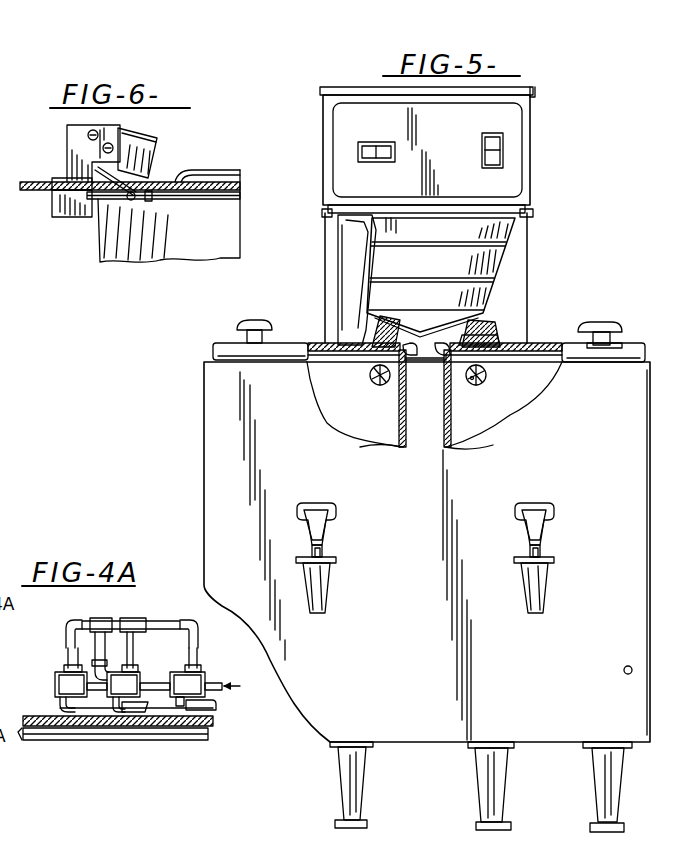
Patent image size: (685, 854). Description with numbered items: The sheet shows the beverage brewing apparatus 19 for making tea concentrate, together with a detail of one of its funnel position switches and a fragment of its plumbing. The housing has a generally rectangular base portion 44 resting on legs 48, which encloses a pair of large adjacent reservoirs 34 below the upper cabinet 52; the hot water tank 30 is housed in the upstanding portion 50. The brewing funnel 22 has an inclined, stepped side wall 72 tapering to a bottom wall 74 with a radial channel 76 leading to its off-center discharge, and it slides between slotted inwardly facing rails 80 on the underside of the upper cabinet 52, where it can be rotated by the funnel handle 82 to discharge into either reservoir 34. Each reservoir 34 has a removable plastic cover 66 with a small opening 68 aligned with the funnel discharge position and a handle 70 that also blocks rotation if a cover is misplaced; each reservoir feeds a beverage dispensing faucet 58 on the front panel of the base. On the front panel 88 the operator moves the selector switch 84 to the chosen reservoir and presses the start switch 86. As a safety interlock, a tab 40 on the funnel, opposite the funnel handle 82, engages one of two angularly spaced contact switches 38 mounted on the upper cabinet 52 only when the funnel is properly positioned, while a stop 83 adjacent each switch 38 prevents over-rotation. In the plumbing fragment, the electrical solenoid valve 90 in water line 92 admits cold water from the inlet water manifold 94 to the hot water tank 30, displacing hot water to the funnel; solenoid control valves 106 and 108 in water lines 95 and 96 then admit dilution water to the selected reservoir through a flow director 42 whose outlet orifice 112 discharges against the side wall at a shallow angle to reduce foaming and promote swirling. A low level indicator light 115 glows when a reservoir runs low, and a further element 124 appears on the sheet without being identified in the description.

In FIG. 5, the beverage brewing apparatus 19 is at (568, 228).
In FIG. 5, the brewing funnel 22 is at (495, 272).
In FIG. 6, the brewing funnel 22 is at (175, 248).
In FIG. 5, the reservoir 34 is at (353, 412).
In FIG. 6, the contact switch 38 is at (155, 153).
In FIG. 6, the tab 40 is at (83, 218).
In FIG. 5, the flow director 42 is at (378, 378).
In FIG. 5, the base portion 44 is at (213, 458).
In FIG. 5, the legs 48 is at (481, 787).
In FIG. 5, the upper cabinet 52 is at (323, 147).
In FIG. 5, the beverage dispensing faucet 58 is at (320, 590).
In FIG. 5, the removable plastic cover 66 is at (541, 345).
In FIG. 5, the opening 68 is at (483, 345).
In FIG. 5, the handle 70 is at (593, 324).
In FIG. 5, the stepped side wall 72 is at (512, 238).
In FIG. 5, the bottom wall 74 is at (421, 318).
In FIG. 5, the radial channel 76 is at (405, 332).
In FIG. 5, the slotted rails 80 is at (325, 213).
In FIG. 5, the funnel handle 82 is at (337, 270).
In FIG. 6, the stop 83 is at (152, 204).
In FIG. 5, the selector switch 84 is at (368, 146).
In FIG. 5, the start switch 86 is at (494, 143).
In FIG. 5, the front panel 88 is at (455, 134).
In FIG. 4A, the electrical solenoid valve 90 is at (62, 685).
In FIG. 4A, the water line 92 is at (82, 712).
In FIG. 4A, the inlet water manifold 94 is at (162, 621).
In FIG. 4A, the water line 95 is at (213, 707).
In FIG. 4A, the water line 96 is at (138, 710).
In FIG. 4A, the solenoid control valve 106 is at (180, 700).
In FIG. 4A, the solenoid control valve 108 is at (115, 710).
In FIG. 5, the outlet orifice 112 is at (447, 384).
In FIG. 5, the low level indicator light 115 is at (626, 667).
In FIG. 6, the hot water tank 30 is at (10, 304).
In FIG. 6, the upstanding portion 50 is at (0, 417).
In FIG. 6, the drain line 124 is at (14, 490).